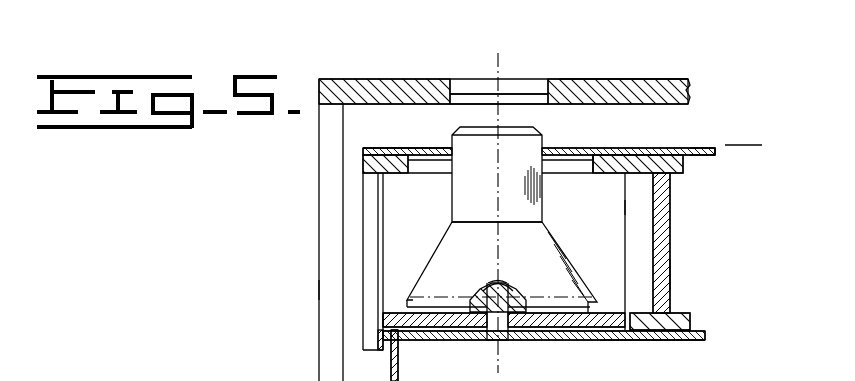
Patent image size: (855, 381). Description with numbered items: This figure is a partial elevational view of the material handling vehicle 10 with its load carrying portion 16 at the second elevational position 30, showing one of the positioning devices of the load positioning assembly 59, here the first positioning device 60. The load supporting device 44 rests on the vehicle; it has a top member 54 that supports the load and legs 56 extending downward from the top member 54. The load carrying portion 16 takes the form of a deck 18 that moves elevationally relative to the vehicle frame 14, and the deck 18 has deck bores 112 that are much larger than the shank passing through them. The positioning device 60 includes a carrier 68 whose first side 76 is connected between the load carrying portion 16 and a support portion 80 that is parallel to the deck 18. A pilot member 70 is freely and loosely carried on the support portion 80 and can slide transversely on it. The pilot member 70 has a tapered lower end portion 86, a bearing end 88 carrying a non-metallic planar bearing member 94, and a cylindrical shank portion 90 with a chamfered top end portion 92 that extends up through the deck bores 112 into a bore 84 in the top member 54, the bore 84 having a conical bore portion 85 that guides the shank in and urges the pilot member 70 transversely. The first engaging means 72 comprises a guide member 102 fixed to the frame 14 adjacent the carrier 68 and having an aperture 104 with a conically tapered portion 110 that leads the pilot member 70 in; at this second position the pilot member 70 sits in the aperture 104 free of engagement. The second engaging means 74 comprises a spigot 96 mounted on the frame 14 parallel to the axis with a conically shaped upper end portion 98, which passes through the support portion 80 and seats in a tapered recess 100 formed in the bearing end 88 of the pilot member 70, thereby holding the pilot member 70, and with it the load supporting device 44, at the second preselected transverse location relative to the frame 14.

The material handling vehicle 10 is at (650, 347).
The vehicle frame 14 is at (399, 346).
The load carrying portion 16 is at (674, 138).
The deck 18 is at (705, 152).
The second elevational position 30 is at (760, 124).
The load supporting device 44 is at (312, 234).
The top member 54 is at (634, 84).
The legs 56 is at (325, 292).
The load positioning assembly 59 is at (663, 18).
The first positioning device 60 is at (714, 277).
The carrier 68 is at (633, 207).
The pilot member 70 is at (580, 247).
The first engaging means 72 is at (356, 165).
The second engaging means 74 is at (522, 344).
The first side 76 is at (612, 228).
The support portion 80 is at (630, 312).
The bore 84 is at (545, 92).
The conical bore portion 85 is at (463, 93).
The tapered lower end portion 86 is at (540, 237).
The bearing end 88 is at (394, 316).
The cylindrical shank portion 90 is at (521, 189).
The chamfered top end portion 92 is at (543, 128).
The planar bearing member 94 is at (447, 307).
The spigot 96 is at (486, 340).
The conically shaped upper end portion 98 is at (566, 262).
The tapered recess 100 is at (485, 283).
The guide member 102 is at (678, 168).
The aperture 104 is at (428, 150).
The conically tapered portion 110 is at (591, 152).
The deck bores 112 is at (416, 150).